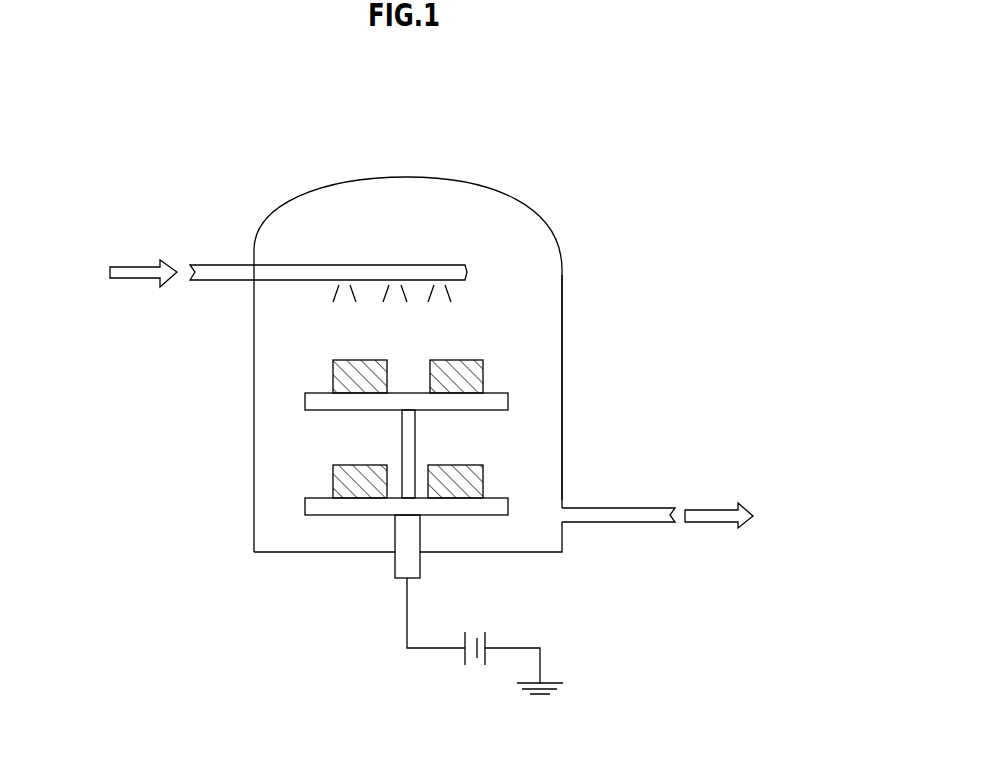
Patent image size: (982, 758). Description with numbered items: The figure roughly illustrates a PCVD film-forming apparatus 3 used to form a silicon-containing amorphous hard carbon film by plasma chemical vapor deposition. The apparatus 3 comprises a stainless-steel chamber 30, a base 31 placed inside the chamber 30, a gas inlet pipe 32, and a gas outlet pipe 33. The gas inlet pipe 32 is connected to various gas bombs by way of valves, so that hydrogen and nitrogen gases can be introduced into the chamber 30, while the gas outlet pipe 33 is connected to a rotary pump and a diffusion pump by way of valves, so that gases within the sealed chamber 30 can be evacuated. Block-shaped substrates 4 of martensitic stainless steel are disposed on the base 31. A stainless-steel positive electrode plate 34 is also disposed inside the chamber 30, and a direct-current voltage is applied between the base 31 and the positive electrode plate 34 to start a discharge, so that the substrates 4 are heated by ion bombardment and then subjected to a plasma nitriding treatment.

The PCVD film-forming apparatus 3 is at (247, 142).
The chamber 30 is at (253, 377).
The base 31 is at (307, 507).
The gas inlet pipe 32 is at (235, 264).
The gas outlet pipe 33 is at (610, 523).
The positive electrode plate 34 is at (563, 338).
The substrate 4 is at (483, 470).